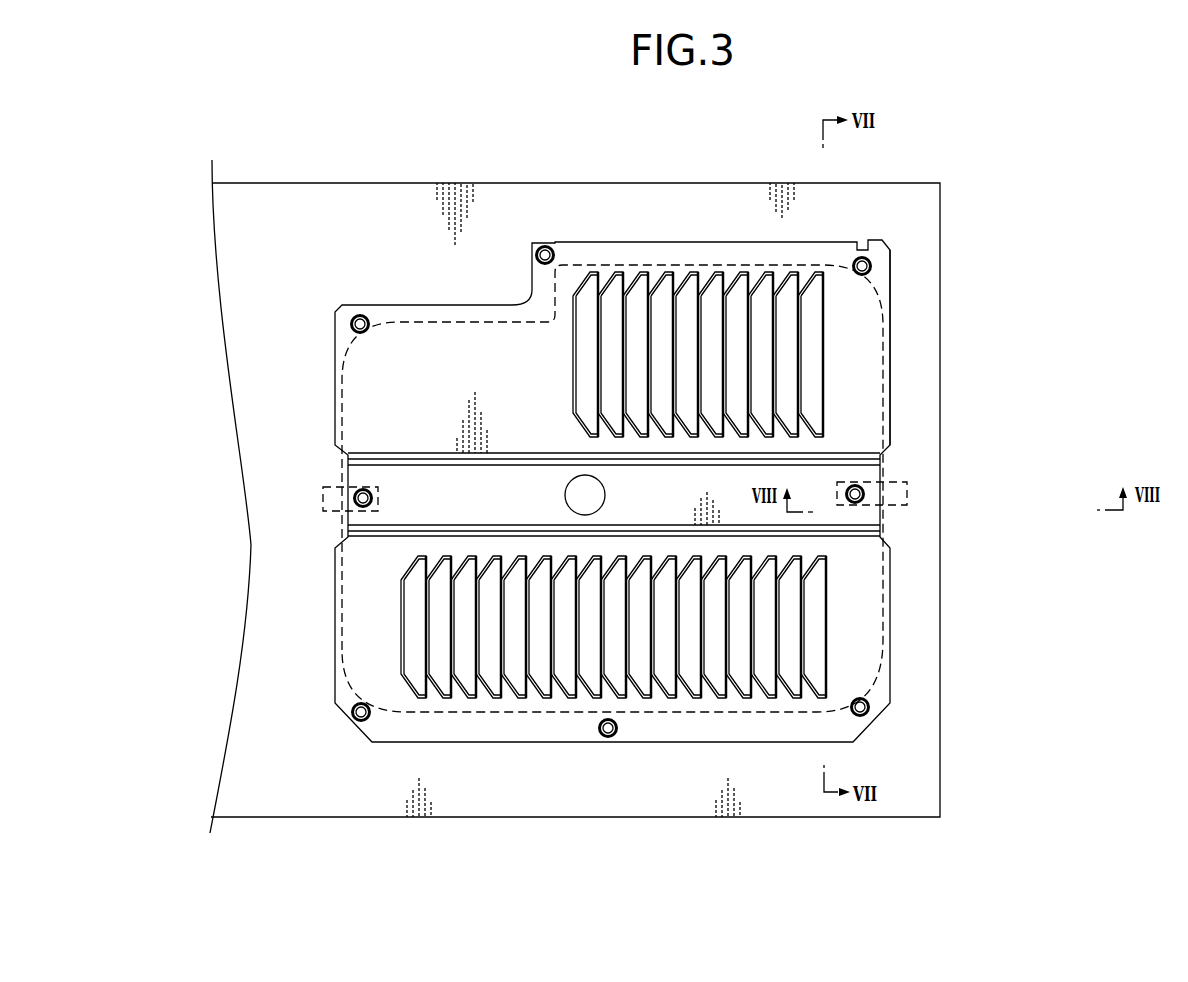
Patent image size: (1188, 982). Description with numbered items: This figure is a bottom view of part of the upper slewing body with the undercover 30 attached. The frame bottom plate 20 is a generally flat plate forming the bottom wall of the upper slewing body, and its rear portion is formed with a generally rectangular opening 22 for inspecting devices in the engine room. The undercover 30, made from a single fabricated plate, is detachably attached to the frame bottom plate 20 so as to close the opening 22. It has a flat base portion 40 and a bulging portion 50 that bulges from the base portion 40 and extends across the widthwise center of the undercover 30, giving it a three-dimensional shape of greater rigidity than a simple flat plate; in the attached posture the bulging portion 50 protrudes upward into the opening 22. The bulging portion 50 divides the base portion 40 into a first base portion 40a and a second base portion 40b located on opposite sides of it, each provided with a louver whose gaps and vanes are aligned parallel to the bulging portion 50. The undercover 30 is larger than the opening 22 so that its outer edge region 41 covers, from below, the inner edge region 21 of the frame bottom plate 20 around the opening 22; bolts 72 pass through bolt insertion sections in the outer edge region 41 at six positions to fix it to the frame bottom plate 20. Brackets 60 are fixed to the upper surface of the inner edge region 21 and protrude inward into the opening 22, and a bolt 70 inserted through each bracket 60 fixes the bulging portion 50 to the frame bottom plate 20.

The frame bottom plate 20 is at (298, 207).
The inner edge region 21 is at (893, 395).
The opening 22 is at (890, 330).
The undercover 30 is at (627, 503).
The base portion 40 is at (735, 476).
The first base portion 40a is at (880, 293).
The second base portion 40b is at (862, 638).
The outer edge region 41 is at (650, 253).
The bulging portion 50 is at (865, 472).
The bracket 60 is at (323, 502).
The bolt 70 is at (358, 495).
The bolt 72 is at (360, 315).